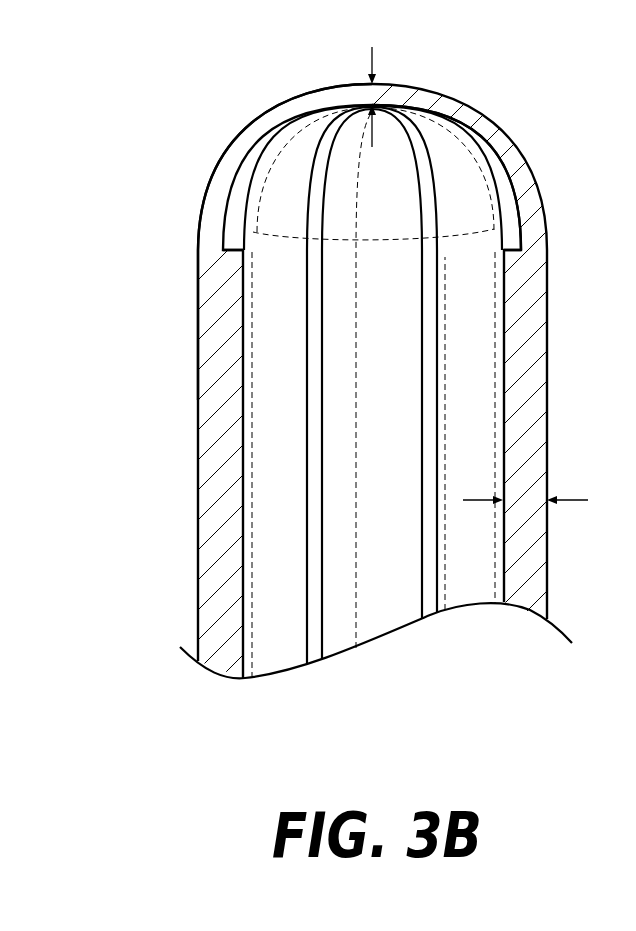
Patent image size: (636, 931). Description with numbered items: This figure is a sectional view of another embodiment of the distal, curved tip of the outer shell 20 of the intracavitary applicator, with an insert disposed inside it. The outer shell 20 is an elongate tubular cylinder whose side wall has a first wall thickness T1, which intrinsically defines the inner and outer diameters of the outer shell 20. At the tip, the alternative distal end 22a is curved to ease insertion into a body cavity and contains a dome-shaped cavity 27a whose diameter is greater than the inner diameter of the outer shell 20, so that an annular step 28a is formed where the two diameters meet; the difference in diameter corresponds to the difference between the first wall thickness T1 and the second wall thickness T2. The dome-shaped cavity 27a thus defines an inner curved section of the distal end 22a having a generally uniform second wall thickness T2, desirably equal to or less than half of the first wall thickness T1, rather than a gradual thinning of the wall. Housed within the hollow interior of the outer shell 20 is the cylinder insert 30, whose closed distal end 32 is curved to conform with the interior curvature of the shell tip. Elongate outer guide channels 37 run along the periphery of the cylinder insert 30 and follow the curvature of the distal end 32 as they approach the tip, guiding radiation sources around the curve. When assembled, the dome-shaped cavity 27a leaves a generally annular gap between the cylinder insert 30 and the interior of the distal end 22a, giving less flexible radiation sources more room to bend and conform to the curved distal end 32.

The outer shell 20 is at (208, 188).
The alternative distal end 22a is at (190, 221).
The dome-shaped cavity 27a is at (517, 219).
The annular step 28a is at (233, 262).
The cylinder insert 30 is at (385, 632).
The distal end of the cylinder insert 32 is at (290, 160).
The outer guide channels 37 is at (315, 656).
The first wall thickness T1 is at (525, 501).
The second wall thickness T2 is at (380, 86).